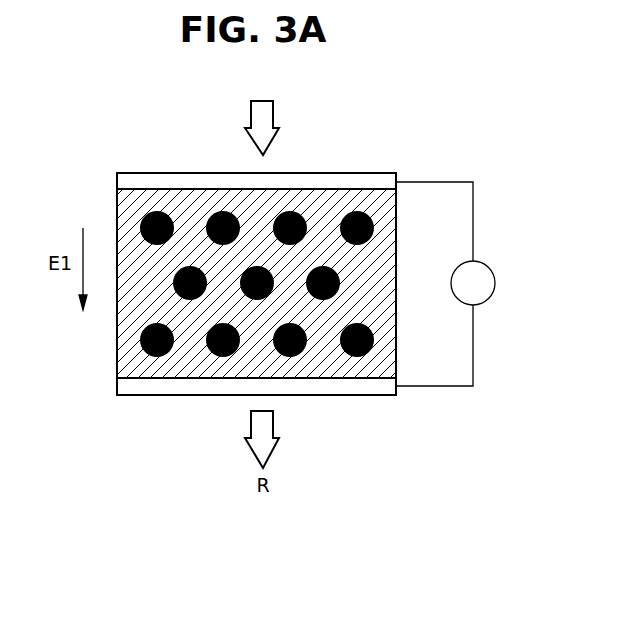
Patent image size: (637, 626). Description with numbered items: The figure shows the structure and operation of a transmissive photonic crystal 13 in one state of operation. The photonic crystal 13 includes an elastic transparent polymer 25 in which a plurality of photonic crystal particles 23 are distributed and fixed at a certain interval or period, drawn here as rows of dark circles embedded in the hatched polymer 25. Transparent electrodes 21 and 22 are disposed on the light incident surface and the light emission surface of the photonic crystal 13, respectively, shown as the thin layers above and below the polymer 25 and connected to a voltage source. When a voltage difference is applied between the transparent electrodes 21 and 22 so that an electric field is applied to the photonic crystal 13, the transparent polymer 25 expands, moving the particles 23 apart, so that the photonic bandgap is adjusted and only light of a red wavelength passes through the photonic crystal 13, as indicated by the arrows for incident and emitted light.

The photonic crystal 13 is at (291, 299).
The transparent electrode 21 is at (120, 390).
The transparent electrode 22 is at (117, 182).
The photonic crystal particles 23 is at (373, 230).
The transparent polymer 25 is at (382, 263).